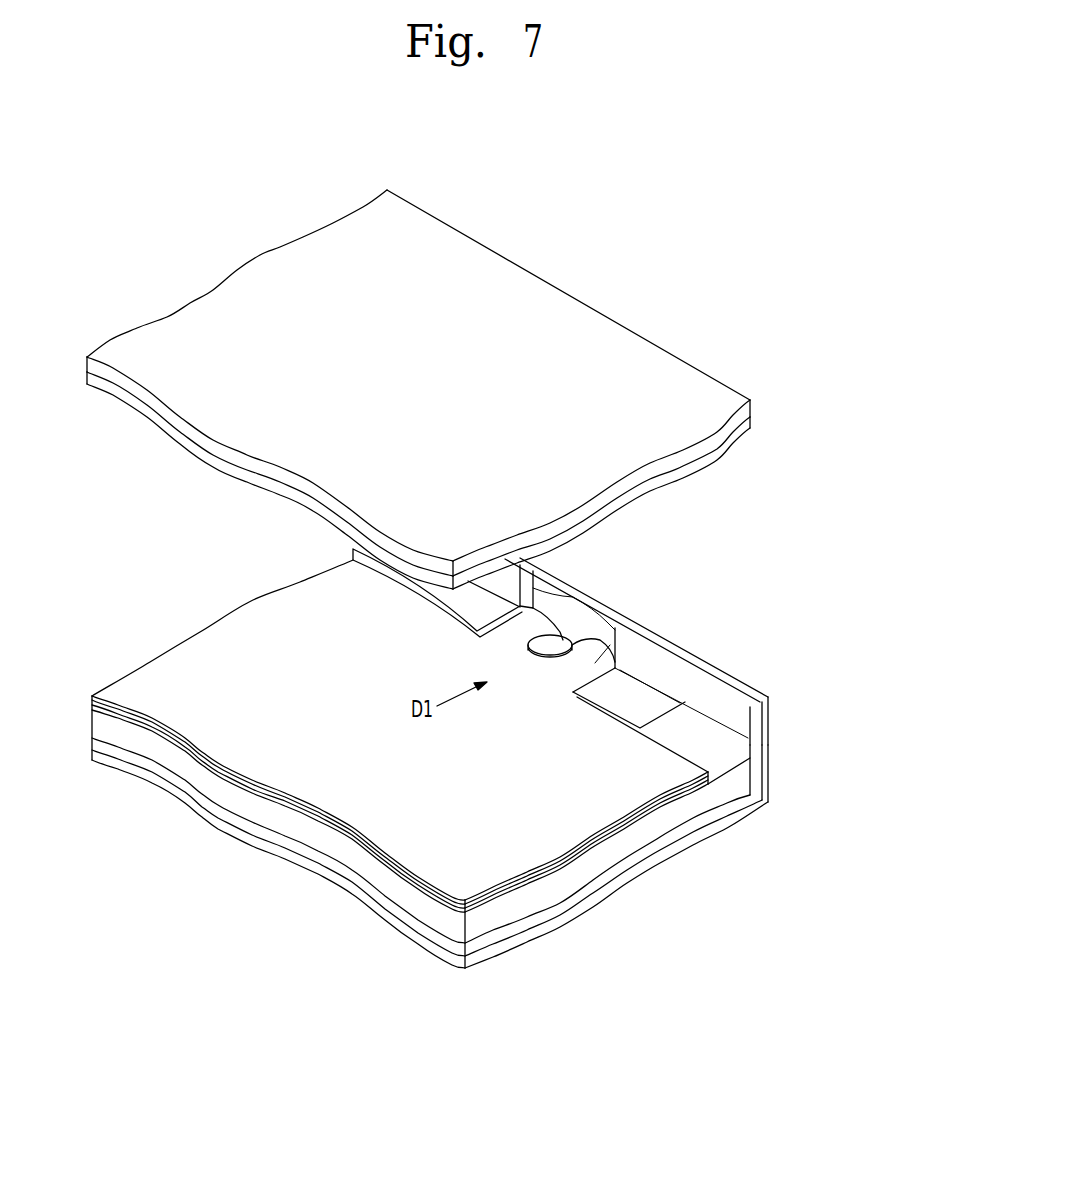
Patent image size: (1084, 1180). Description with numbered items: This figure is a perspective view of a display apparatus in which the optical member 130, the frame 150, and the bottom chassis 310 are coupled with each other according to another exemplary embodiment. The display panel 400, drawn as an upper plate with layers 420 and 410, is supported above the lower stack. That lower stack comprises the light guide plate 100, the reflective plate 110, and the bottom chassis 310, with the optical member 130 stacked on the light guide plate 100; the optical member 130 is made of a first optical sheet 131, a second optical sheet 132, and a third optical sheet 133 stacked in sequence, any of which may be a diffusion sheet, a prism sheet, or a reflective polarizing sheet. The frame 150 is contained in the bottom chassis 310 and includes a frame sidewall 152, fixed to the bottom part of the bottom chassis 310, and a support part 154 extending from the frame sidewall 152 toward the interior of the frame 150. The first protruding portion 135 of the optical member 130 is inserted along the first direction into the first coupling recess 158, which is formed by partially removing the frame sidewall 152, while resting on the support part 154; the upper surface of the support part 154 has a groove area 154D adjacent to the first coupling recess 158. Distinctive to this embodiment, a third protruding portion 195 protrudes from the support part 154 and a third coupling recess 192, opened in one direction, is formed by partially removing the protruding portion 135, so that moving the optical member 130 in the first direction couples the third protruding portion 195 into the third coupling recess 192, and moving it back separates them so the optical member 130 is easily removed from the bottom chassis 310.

The display panel 400 is at (476, 389).
The upper substrate layer 420 is at (730, 395).
The upper electrode layer 410 is at (745, 417).
The light guide plate 100 is at (468, 769).
The reflective plate 110 is at (323, 862).
The bottom chassis 310 is at (392, 928).
The optical member 130 is at (439, 819).
The first optical sheet 131 is at (557, 873).
The second optical sheet 132 is at (603, 838).
The third optical sheet 133 is at (660, 808).
The first protruding portion 135 is at (640, 698).
The frame 150 is at (623, 675).
The frame sidewall 152 is at (757, 777).
The support part 154 is at (728, 763).
The groove area 154D is at (710, 682).
The first coupling recess 158 is at (585, 590).
The third coupling recess 192 is at (615, 628).
The third protruding portion 195 is at (582, 633).